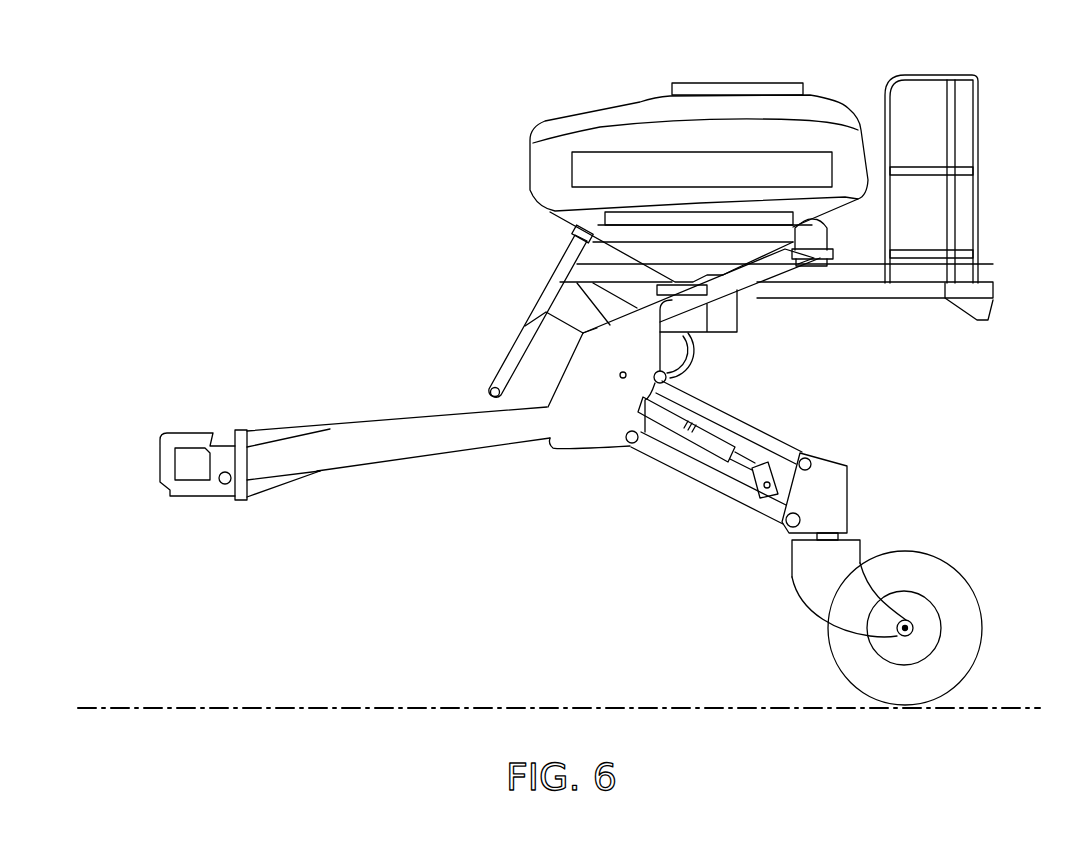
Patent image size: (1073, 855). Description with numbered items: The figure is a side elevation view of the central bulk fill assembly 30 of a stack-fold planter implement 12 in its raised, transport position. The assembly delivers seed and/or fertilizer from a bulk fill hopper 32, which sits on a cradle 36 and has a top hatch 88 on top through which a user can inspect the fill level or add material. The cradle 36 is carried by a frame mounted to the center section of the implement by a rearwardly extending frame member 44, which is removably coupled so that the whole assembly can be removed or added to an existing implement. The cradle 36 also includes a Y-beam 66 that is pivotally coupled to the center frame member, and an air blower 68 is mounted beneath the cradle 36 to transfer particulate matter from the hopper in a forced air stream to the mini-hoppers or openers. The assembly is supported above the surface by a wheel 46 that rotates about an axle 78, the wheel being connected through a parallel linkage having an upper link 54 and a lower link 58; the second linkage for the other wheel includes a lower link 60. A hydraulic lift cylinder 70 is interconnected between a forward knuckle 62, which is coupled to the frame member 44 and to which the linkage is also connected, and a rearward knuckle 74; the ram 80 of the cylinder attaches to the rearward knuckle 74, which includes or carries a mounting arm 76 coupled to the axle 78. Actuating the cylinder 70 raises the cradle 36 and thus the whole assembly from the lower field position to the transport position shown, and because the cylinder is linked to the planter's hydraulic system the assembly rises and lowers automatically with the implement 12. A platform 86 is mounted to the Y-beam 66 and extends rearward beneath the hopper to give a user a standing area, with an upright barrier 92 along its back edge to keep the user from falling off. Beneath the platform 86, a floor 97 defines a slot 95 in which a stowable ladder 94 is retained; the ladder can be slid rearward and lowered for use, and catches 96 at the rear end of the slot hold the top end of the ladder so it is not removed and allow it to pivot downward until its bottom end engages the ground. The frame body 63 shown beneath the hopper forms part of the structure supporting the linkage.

The implement 12 is at (320, 172).
The central bulk fill assembly 30 is at (836, 86).
The bulk fill hopper 32 is at (573, 133).
The cradle 36 is at (607, 237).
The frame member 44 is at (413, 443).
The wheel 46 is at (967, 648).
The upper link 54 is at (735, 422).
The lower link 58 is at (738, 493).
The lower link 60 is at (692, 492).
The forward knuckle 62 is at (737, 298).
The frame body 63 is at (588, 420).
The Y-beam 66 is at (512, 360).
The air blower 68 is at (745, 344).
The hydraulic lift cylinder 70 is at (690, 400).
The rearward knuckle 74 is at (833, 507).
The mounting arm 76 is at (820, 587).
The axle 78 is at (913, 627).
The ram 80 is at (745, 455).
The platform 86 is at (940, 272).
The top hatch 88 is at (754, 88).
The barrier 92 is at (994, 88).
The stowable ladder 94 is at (923, 287).
The slot 95 is at (822, 303).
The catches 96 is at (982, 312).
The floor 97 is at (880, 300).